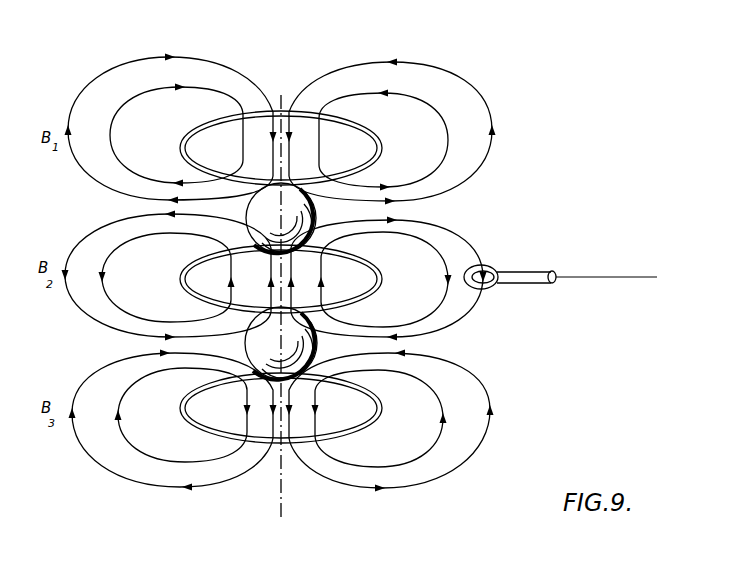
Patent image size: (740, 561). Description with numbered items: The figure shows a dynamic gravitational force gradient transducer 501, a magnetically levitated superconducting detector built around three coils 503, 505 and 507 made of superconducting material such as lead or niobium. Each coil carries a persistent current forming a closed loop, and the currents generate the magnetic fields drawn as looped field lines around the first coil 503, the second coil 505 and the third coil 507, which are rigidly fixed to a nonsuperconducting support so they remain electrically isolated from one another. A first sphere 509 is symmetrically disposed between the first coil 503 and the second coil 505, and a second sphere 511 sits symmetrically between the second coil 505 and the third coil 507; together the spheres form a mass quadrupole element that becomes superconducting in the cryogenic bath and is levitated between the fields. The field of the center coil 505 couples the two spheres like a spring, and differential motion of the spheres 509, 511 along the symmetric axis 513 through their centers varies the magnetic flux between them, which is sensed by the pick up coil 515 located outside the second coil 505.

The dynamic gravitational force gradient transducer 501 is at (315, 43).
The first coil 503 is at (283, 108).
The second coil 505 is at (205, 290).
The third coil 507 is at (196, 420).
The first sphere 509 is at (257, 218).
The second sphere 511 is at (258, 337).
The axis 513 is at (279, 493).
The pick up coil 515 is at (495, 267).